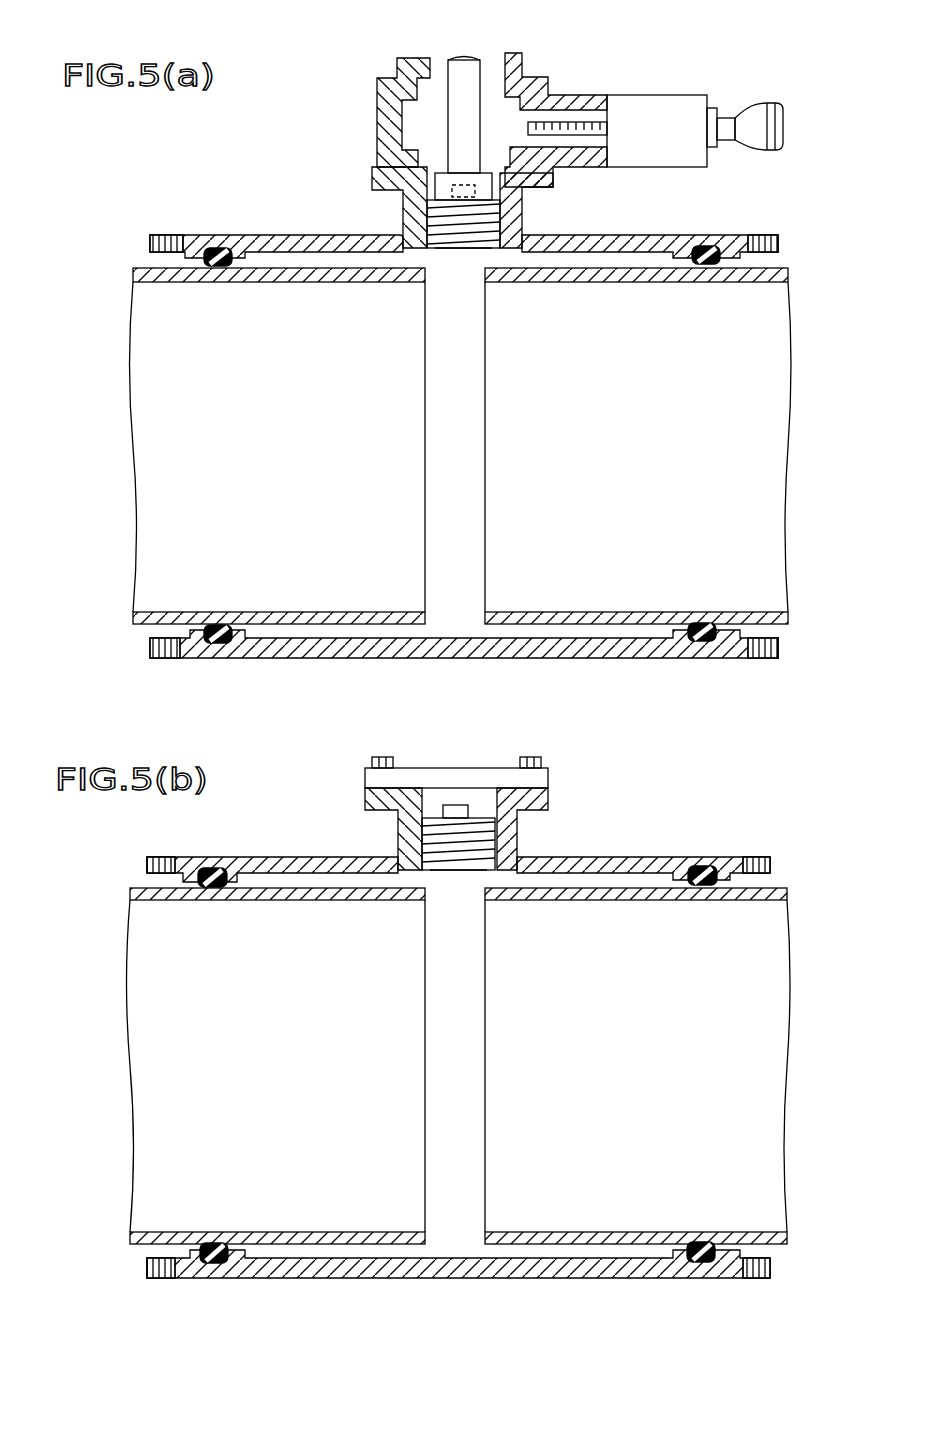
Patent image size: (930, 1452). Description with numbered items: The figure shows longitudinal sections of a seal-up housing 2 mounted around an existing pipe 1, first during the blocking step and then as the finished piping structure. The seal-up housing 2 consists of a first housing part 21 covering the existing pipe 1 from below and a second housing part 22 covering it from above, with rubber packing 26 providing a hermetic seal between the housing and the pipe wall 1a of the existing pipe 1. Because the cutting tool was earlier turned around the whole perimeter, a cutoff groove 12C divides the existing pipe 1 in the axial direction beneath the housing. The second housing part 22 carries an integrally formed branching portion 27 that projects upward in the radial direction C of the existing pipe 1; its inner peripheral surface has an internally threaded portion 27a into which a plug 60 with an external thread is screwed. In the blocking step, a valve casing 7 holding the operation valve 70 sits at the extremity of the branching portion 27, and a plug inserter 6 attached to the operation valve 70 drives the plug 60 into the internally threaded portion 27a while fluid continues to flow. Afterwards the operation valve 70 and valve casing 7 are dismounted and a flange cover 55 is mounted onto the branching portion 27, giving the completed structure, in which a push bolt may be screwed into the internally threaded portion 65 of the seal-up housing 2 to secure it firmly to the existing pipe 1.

In FIG. 5A, the existing pipe 1 is at (461, 446).
In FIG. 5B, the existing pipe 1 is at (459, 1066).
In FIG. 5A, the tube wall 1a is at (568, 282).
In FIG. 5B, the tube wall 1a is at (568, 900).
In FIG. 5A, the cutoff groove 12C is at (468, 386).
In FIG. 5B, the cutoff groove 12C is at (458, 1033).
In FIG. 5A, the seal-up housing 2 is at (303, 150).
In FIG. 5A, the plug inserter 6 is at (522, 34).
In FIG. 5A, the valve casing 7 is at (378, 137).
In FIG. 5A, the first housing part 21 is at (285, 654).
In FIG. 5B, the first housing part 21 is at (275, 1268).
In FIG. 5A, the second housing part 22 is at (284, 237).
In FIG. 5B, the rubber packing 26 is at (212, 865).
In FIG. 5A, the branching portion 27 is at (513, 218).
In FIG. 5B, the branching portion 27 is at (508, 838).
In FIG. 5A, the internally threaded portion 27a is at (416, 213).
In FIG. 5B, the flange cover 55 is at (440, 797).
In FIG. 5A, the plug 60 is at (458, 246).
In FIG. 5B, the plug 60 is at (455, 873).
In FIG. 5B, the internally threaded portion 65 is at (160, 857).
In FIG. 5A, the operation valve 70 is at (661, 110).
In FIG. 5A, the radial direction C is at (348, 15).